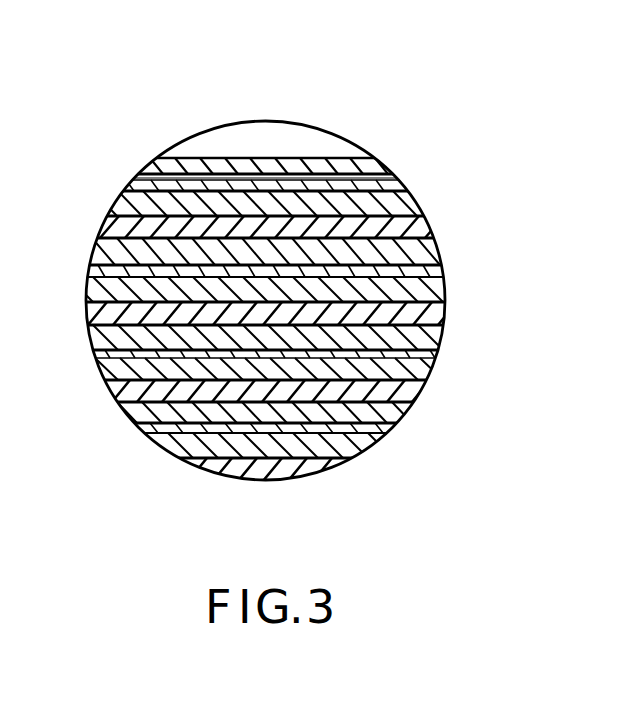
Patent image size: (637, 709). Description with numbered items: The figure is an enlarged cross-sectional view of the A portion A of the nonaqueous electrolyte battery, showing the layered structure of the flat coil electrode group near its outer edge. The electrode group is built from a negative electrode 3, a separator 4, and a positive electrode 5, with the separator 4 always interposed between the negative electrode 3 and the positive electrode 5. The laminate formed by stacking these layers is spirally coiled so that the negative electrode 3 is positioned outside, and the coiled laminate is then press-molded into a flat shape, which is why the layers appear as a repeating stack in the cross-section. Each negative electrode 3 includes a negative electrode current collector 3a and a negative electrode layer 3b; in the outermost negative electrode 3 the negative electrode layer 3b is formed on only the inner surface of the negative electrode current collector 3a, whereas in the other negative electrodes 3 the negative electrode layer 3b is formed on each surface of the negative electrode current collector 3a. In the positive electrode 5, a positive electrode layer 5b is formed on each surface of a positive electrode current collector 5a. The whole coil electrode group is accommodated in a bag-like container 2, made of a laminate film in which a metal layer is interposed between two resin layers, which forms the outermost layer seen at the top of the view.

The A portion A is at (183, 150).
The bag-like container 2 is at (388, 157).
The negative electrode 3 is at (490, 148).
The negative electrode current collector 3a is at (402, 182).
The negative electrode layer 3b is at (397, 202).
The separator 4 is at (100, 232).
The positive electrode 5 is at (518, 222).
The positive electrode current collector 5a is at (430, 269).
The positive electrode layer 5b is at (422, 242).